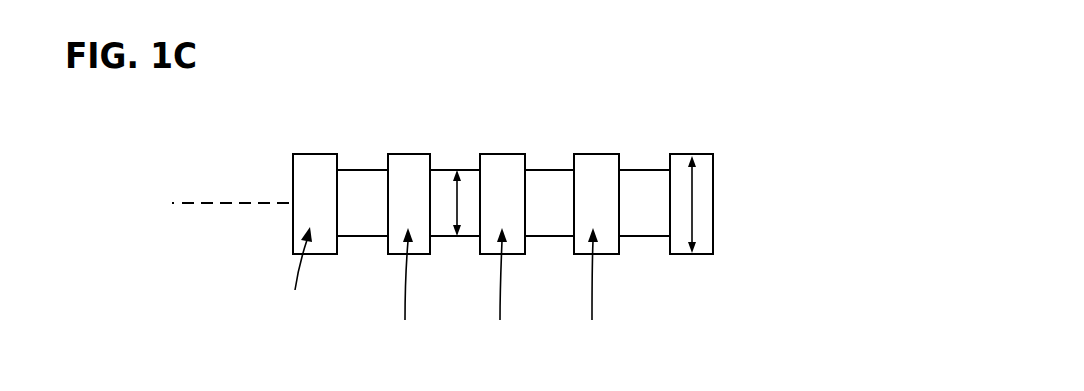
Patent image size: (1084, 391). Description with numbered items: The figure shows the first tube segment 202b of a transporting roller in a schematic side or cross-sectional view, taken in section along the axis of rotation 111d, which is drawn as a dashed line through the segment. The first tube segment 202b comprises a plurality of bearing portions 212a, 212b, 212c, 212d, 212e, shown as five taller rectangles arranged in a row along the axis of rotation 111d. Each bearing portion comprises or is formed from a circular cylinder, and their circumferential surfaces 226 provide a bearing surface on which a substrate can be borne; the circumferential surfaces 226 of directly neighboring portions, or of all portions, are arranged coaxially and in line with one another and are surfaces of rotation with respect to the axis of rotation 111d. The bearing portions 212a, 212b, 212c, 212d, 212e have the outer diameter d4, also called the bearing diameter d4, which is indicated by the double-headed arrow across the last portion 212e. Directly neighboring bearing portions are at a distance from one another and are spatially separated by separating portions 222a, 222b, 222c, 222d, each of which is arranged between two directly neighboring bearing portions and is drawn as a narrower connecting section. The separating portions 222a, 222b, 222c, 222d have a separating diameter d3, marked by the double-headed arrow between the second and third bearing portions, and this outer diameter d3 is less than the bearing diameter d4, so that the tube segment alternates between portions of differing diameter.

The first tube segment 202b is at (845, 100).
The axis of rotation 111d is at (190, 204).
The bearing portion 212a is at (320, 162).
The bearing portion 212b is at (412, 162).
The bearing portion 212c is at (505, 160).
The bearing portion 212d is at (602, 155).
The bearing portion 212e is at (706, 155).
The separating portion 222a is at (366, 237).
The separating portion 222b is at (460, 237).
The separating portion 222c is at (555, 237).
The separating portion 222d is at (638, 237).
The circumferential surface 226 is at (442, 287).
The separating diameter d3 is at (457, 180).
The bearing diameter d4 is at (693, 253).